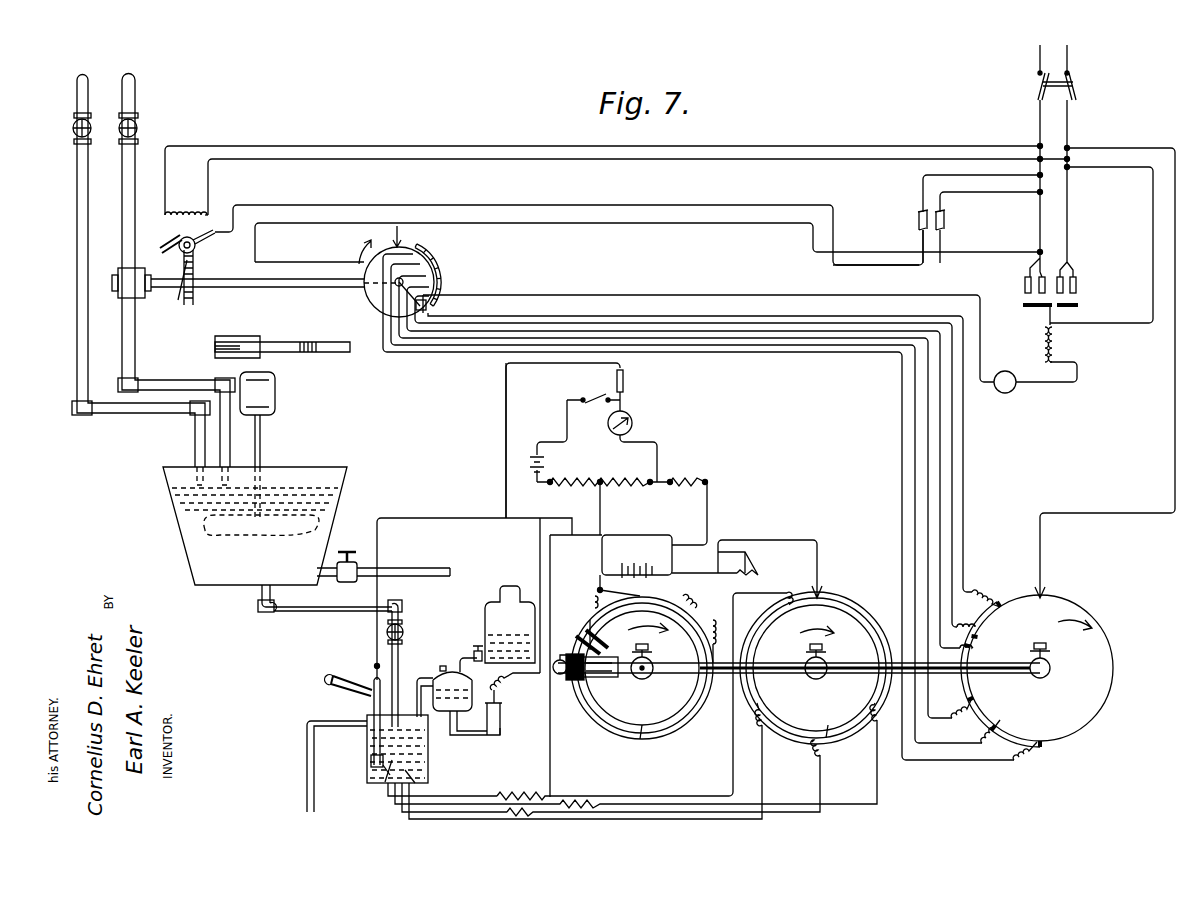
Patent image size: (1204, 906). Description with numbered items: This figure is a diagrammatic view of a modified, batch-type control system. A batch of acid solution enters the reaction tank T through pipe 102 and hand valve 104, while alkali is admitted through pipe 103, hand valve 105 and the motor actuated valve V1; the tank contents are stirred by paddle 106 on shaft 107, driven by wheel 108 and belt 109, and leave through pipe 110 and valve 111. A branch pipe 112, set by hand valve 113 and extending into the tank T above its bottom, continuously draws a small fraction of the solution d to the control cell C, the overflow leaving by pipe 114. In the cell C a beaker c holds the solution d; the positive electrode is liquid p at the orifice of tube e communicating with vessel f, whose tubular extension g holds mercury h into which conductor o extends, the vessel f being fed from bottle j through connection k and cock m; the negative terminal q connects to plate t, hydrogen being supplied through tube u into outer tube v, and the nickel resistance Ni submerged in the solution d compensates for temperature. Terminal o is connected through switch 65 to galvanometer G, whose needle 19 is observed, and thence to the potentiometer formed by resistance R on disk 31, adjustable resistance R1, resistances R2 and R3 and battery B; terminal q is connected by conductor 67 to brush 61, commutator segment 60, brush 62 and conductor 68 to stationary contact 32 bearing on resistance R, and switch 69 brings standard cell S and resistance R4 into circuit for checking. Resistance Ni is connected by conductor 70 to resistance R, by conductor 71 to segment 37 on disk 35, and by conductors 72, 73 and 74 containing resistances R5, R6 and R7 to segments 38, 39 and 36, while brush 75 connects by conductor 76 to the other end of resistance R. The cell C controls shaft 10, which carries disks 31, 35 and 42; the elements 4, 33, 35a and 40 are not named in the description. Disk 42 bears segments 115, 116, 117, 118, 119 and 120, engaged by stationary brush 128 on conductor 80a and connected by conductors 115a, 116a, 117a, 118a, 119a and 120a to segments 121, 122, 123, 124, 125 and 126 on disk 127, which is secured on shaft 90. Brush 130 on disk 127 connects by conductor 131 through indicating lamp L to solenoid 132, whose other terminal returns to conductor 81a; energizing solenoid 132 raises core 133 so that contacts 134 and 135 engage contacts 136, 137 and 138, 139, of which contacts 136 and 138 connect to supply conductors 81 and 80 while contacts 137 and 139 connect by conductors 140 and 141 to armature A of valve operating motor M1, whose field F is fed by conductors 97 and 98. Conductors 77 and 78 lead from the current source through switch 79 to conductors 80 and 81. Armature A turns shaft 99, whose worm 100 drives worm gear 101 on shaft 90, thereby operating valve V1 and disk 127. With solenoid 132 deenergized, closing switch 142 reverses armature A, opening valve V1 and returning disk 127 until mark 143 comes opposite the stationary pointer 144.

The water supply pipe 102 is at (77, 93).
The supply pipe 103 is at (135, 93).
The valve 104 is at (73, 128).
The valve 105 is at (137, 128).
The valve V1 is at (118, 275).
The valve operating rod 90 is at (158, 279).
The rack 101 is at (193, 296).
The link 100 is at (166, 284).
The lever pivot and wire 99 is at (200, 238).
The armature A is at (168, 232).
The spring F is at (190, 213).
The magnet M1 is at (195, 240).
The conductor 97 is at (245, 146).
The conductor 98 is at (228, 159).
The conductor 140 is at (890, 247).
The conductor 141 is at (870, 265).
The relay 142 is at (948, 222).
The supply terminal 77 is at (1038, 55).
The supply terminal 78 is at (1070, 55).
The plug switch 79 is at (1075, 90).
The supply conductor 80 is at (1040, 125).
The supply conductor 81 is at (1067, 125).
The conductor 80a is at (1105, 148).
The conductor 81a is at (1153, 195).
The brush connection 128 is at (1036, 595).
The contact 139 is at (1025, 282).
The contact 138 is at (1040, 275).
The contact 137 is at (1075, 272).
The contact 136 is at (1065, 282).
The contact bar 135 is at (1023, 305).
The contact bar 134 is at (1078, 303).
The stem 133 is at (1053, 315).
The solenoid 132 is at (1062, 343).
The lamp L is at (1005, 371).
The conductor 131 is at (548, 296).
The rotary switch 127 is at (370, 292).
The switch arm contact 130 is at (428, 307).
The index 144 is at (400, 232).
The direction arrow 143 is at (361, 245).
The switch contact 126 is at (421, 248).
The switch contact 125 is at (428, 255).
The switch contact 124 is at (433, 262).
The switch contact 123 is at (437, 272).
The switch contact 122 is at (439, 280).
The switch contact 121 is at (438, 290).
The conductor 115a is at (384, 352).
The conductor 116a is at (472, 346).
The conductor 117a is at (430, 340).
The conductor 118a is at (627, 330).
The conductor 119a is at (558, 324).
The conductor 120a is at (496, 318).
The field coil contact 115 is at (1042, 740).
The field coil contact 116 is at (998, 722).
The field coil contact 117 is at (985, 694).
The field coil contact 118 is at (982, 648).
The field coil contact 119 is at (985, 632).
The field coil contact 120 is at (1003, 610).
The motor 42 is at (1110, 640).
The bearing 40 is at (1050, 651).
The shaft 10 is at (700, 663).
The generator 31 is at (642, 680).
The bearing 33 is at (648, 648).
The commutator 60 is at (598, 678).
The shaft end 4 is at (558, 675).
The brush 61 is at (594, 648).
The brush 62 is at (600, 650).
The conductor 67 is at (377, 625).
The conductor 68 is at (590, 584).
The brush arm 32 is at (615, 592).
The field resistance R is at (675, 603).
The motor armature 35 is at (850, 625).
The motor field 36 is at (855, 606).
The motor ring 37 is at (882, 640).
The bearing 35a is at (826, 652).
The motor shaft 39 is at (770, 683).
The motor terminal 38 is at (833, 719).
The conductor 75 is at (798, 594).
The conductor 76 is at (818, 545).
The rheostat R1 is at (748, 560).
The field coil 74 is at (786, 596).
The conductor 73 is at (762, 768).
The conductor 72 is at (820, 770).
The conductor 71 is at (877, 797).
The conductor 70 is at (465, 796).
The resistance R7 is at (522, 784).
The resistance R6 is at (540, 802).
The resistance R5 is at (517, 814).
The fuse 65 is at (624, 380).
The switch 69 is at (594, 398).
The galvanometer G is at (632, 420).
The galvanometer needle 19 is at (612, 428).
The standard cell S is at (545, 465).
The resistance R4 is at (568, 480).
The resistance R2 is at (688, 480).
The resistance R3 is at (618, 492).
The battery B is at (648, 562).
The tank T is at (340, 485).
The heating coil 106 is at (285, 520).
The valve 107 is at (262, 436).
The rack bar 109 is at (318, 344).
The guide 108 is at (275, 358).
The valve 111 is at (347, 582).
The outlet pipe 110 is at (437, 576).
The pipe 112 is at (278, 607).
The valve 113 is at (403, 628).
The overflow pipe 114 is at (308, 770).
The cell C is at (376, 749).
The electrode c is at (371, 760).
The electrode t is at (385, 768).
The nickel electrode Ni is at (385, 780).
The electrode p is at (416, 772).
The vessel d is at (415, 735).
The tube e is at (403, 697).
The tube h is at (470, 735).
The tube g is at (500, 733).
The beaker o is at (494, 703).
The conductor f is at (511, 687).
The tube k is at (466, 662).
The valve m is at (478, 646).
The bottle j is at (485, 612).
The electrode lead q is at (372, 672).
The tube v is at (374, 706).
The inlet u is at (343, 687).